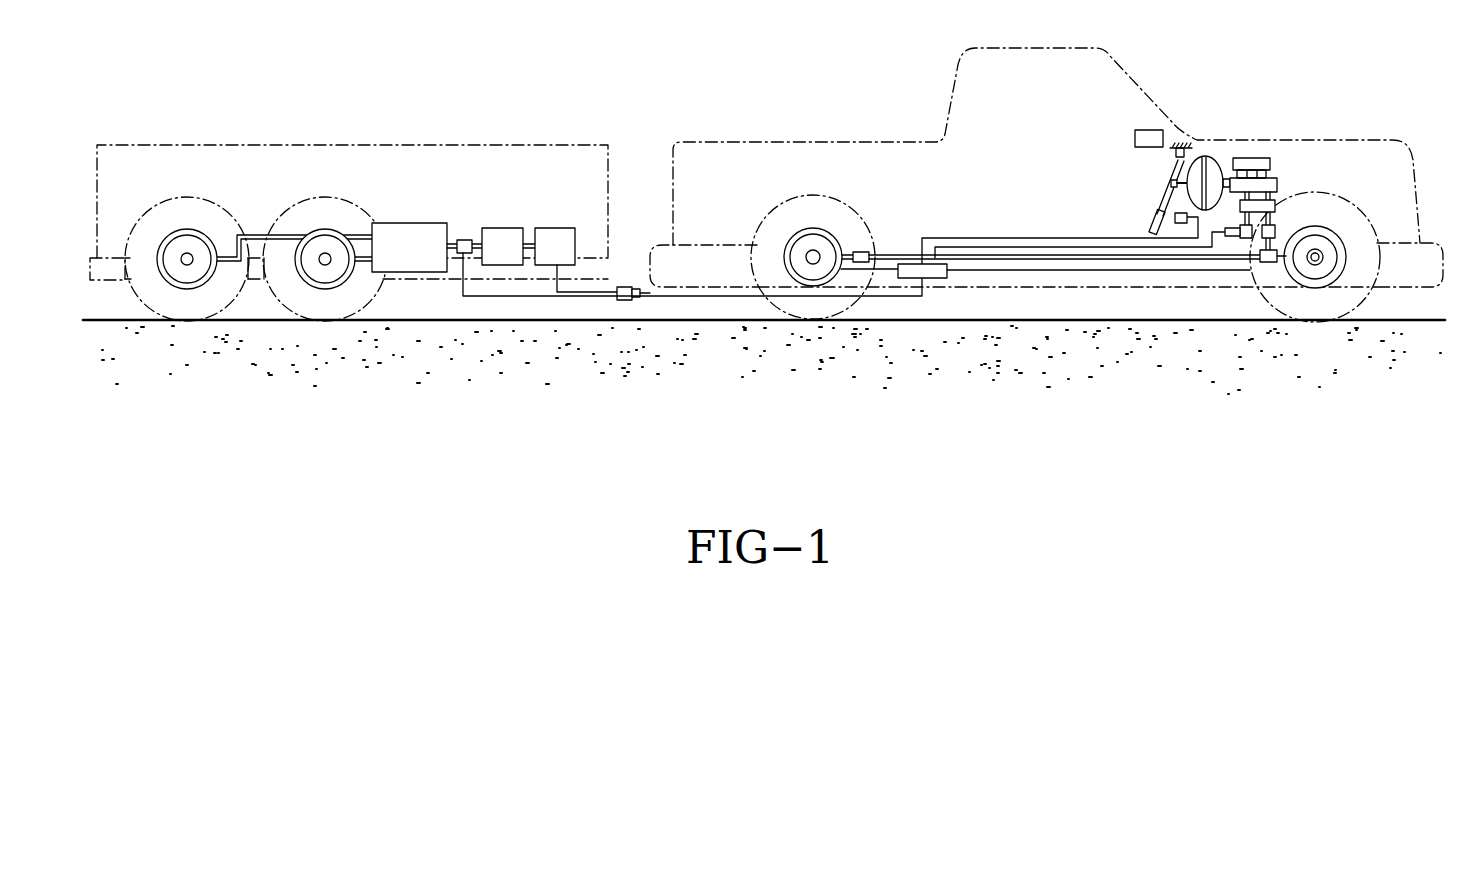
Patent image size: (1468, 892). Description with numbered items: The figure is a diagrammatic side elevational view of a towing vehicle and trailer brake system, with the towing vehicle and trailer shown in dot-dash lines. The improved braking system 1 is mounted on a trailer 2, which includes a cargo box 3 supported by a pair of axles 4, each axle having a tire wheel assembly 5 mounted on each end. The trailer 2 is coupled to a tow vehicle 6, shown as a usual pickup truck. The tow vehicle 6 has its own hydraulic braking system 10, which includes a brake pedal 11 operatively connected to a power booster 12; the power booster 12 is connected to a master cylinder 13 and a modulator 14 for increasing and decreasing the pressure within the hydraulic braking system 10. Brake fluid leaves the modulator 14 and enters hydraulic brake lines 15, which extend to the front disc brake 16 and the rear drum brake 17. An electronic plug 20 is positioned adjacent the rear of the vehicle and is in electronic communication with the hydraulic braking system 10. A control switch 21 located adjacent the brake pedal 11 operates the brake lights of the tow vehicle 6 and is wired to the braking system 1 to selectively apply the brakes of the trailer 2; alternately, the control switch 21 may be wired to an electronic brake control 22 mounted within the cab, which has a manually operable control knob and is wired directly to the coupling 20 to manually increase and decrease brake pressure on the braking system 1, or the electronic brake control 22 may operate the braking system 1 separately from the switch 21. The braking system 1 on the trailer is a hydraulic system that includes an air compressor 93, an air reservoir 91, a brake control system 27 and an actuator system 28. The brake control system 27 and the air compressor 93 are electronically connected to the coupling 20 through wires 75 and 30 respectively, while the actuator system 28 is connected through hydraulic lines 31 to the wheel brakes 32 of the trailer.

The braking system 1 is at (454, 274).
The trailer 2 is at (538, 132).
The cargo box 3 is at (266, 143).
The axles 4 is at (182, 258).
The tire wheel assembly 5 is at (211, 199).
The tow vehicle 6 is at (1020, 46).
The hydraulic braking system 10 is at (1227, 143).
The brake pedal 11 is at (1156, 222).
The power booster 12 is at (1196, 162).
The master cylinder 13 is at (1276, 180).
The modulator 14 is at (1276, 207).
The hydraulic brake lines 15 is at (1003, 256).
The front disc brake 16 is at (1331, 235).
The rear drum brake 17 is at (810, 229).
The electronic plug 20 is at (632, 289).
The control switch 21 is at (1173, 191).
The electronic brake control 22 is at (1135, 138).
The brake control system 27 is at (463, 240).
The actuator system 28 is at (410, 238).
The wires 30 is at (582, 291).
The hydraulic lines 31 is at (358, 233).
The wheel brakes 32 is at (178, 246).
The wires 75 is at (522, 298).
The air reservoir 91 is at (506, 233).
The air compressor 93 is at (550, 232).